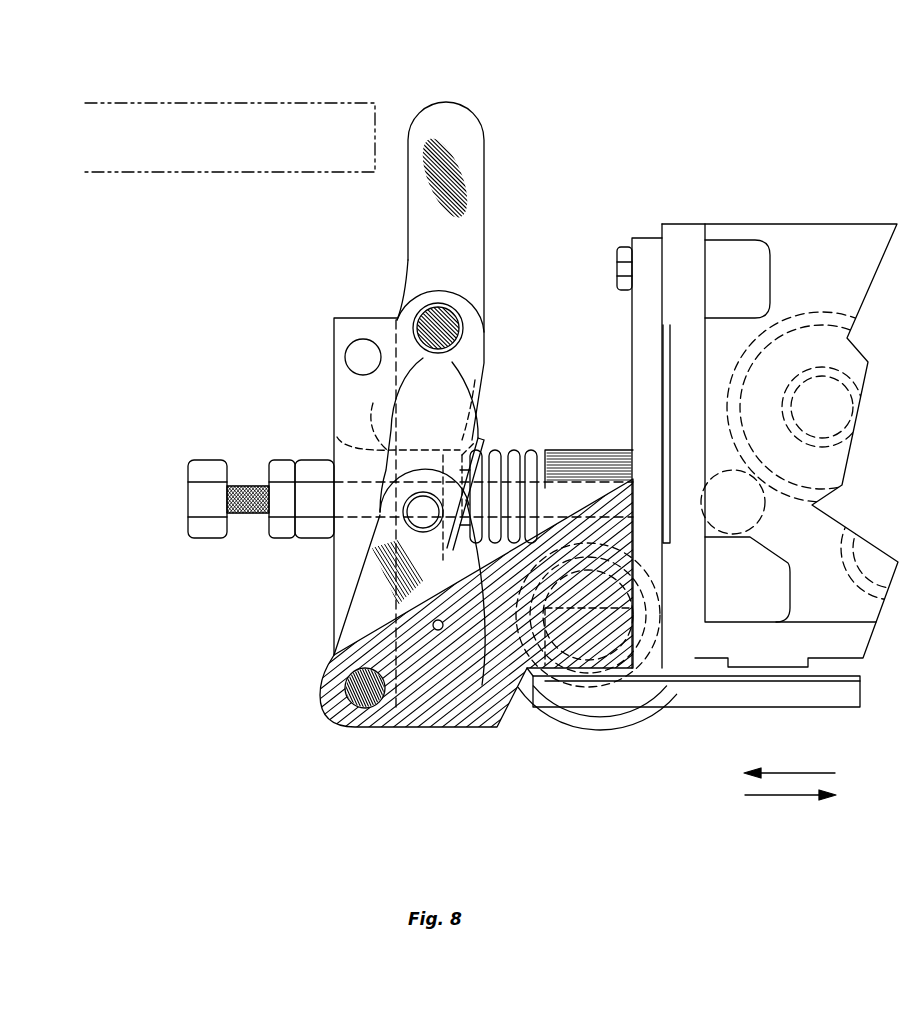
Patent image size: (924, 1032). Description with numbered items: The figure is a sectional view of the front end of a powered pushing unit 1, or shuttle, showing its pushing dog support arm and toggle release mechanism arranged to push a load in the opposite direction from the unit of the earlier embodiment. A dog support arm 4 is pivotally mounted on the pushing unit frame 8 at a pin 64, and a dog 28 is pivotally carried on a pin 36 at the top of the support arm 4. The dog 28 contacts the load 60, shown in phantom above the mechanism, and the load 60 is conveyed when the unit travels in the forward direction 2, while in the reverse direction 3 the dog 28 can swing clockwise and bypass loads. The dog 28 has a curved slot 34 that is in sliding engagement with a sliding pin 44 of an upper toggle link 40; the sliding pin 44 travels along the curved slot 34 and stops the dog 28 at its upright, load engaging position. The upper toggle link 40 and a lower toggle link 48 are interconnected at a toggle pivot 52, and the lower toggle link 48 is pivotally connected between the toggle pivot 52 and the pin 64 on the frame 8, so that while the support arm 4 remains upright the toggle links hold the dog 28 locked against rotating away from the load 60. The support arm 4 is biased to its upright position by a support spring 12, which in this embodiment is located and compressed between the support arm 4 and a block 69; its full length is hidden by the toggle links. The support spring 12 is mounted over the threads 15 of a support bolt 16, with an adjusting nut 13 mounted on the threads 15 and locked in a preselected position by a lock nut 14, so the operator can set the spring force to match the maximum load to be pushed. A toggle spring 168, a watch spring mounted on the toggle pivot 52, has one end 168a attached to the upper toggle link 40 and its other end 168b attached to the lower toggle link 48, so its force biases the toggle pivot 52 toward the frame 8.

The load 60 is at (168, 125).
The dog 28 is at (455, 122).
The sliding pin 44 is at (440, 320).
The curved slot 34 is at (452, 355).
The link upper end 168a is at (473, 452).
The pin 36 is at (355, 350).
The dog support arm 4 is at (350, 390).
The adjusting nut 13 is at (312, 468).
The lock nut 14 is at (300, 468).
The upper toggle link 40 is at (470, 432).
The support spring 12 is at (548, 448).
The block 69 is at (608, 466).
The support bolt 16 is at (208, 497).
The toggle spring 168 is at (405, 508).
The threads 15 is at (247, 520).
The toggle pivot 52 is at (360, 598).
The lower toggle link 48 is at (448, 540).
The powered pushing unit 1 is at (351, 775).
The pin 64 is at (366, 692).
The other end of the toggle spring 168b is at (482, 685).
The pushing unit frame 8 is at (652, 512).
The forward direction 2 is at (781, 773).
The reverse direction 3 is at (788, 795).